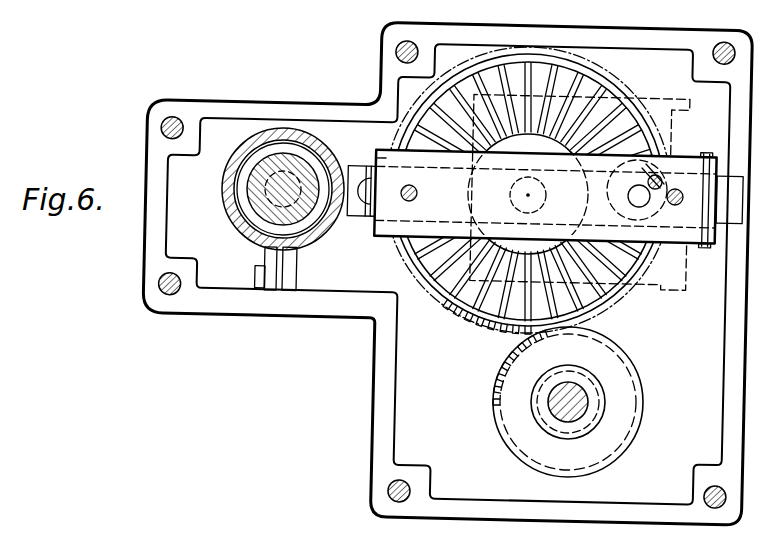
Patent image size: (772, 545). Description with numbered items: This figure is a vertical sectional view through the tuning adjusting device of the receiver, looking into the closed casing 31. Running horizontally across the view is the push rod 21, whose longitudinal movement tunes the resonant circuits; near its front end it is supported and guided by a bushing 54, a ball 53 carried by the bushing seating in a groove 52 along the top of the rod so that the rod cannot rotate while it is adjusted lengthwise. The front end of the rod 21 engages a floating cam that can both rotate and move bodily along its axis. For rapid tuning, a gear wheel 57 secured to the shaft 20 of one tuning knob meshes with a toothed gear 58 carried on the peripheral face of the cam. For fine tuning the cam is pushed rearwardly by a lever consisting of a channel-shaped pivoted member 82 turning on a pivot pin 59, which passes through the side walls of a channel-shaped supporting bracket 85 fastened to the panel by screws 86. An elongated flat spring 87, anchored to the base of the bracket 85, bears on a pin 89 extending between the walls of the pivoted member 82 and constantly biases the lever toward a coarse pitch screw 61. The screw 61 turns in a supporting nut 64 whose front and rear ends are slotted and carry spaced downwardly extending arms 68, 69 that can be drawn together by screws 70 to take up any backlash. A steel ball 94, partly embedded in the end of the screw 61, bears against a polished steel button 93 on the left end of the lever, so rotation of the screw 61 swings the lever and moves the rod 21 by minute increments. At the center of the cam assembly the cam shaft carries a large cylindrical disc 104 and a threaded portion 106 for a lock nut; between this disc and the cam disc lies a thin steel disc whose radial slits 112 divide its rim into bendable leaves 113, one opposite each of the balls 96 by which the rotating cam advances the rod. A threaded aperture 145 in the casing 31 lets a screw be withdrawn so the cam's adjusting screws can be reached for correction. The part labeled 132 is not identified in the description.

The closed casing 31 is at (232, 104).
The supporting nut 64 is at (236, 172).
The coarse pitch screw 61 is at (249, 192).
The steel ball 94 is at (271, 219).
The screws 70 is at (256, 279).
The downwardly extending arm 68 is at (271, 285).
The downwardly extending arm 69 is at (298, 289).
The pivoted member 82 is at (374, 230).
The supporting bracket 85 is at (377, 152).
The steel button 93 is at (373, 170).
The pin 89 is at (369, 190).
The flat spring 87 is at (362, 200).
The screws 86 is at (413, 197).
The radial slits 112 is at (447, 153).
The bendable leaves 113 is at (437, 117).
The cylindrical disc 104 is at (514, 143).
The threaded portion 106 is at (510, 200).
The push rod 21 is at (589, 184).
The balls 96 is at (607, 200).
The wheel rim 132 is at (591, 83).
The groove 52 is at (661, 160).
The ball 53 is at (658, 176).
The bushing 54 is at (650, 190).
The pivot pin 59 is at (706, 149).
The threaded aperture 145 is at (741, 226).
The toothed gear 58 is at (483, 327).
The gear wheel 57 is at (495, 386).
The shaft 20 is at (588, 402).